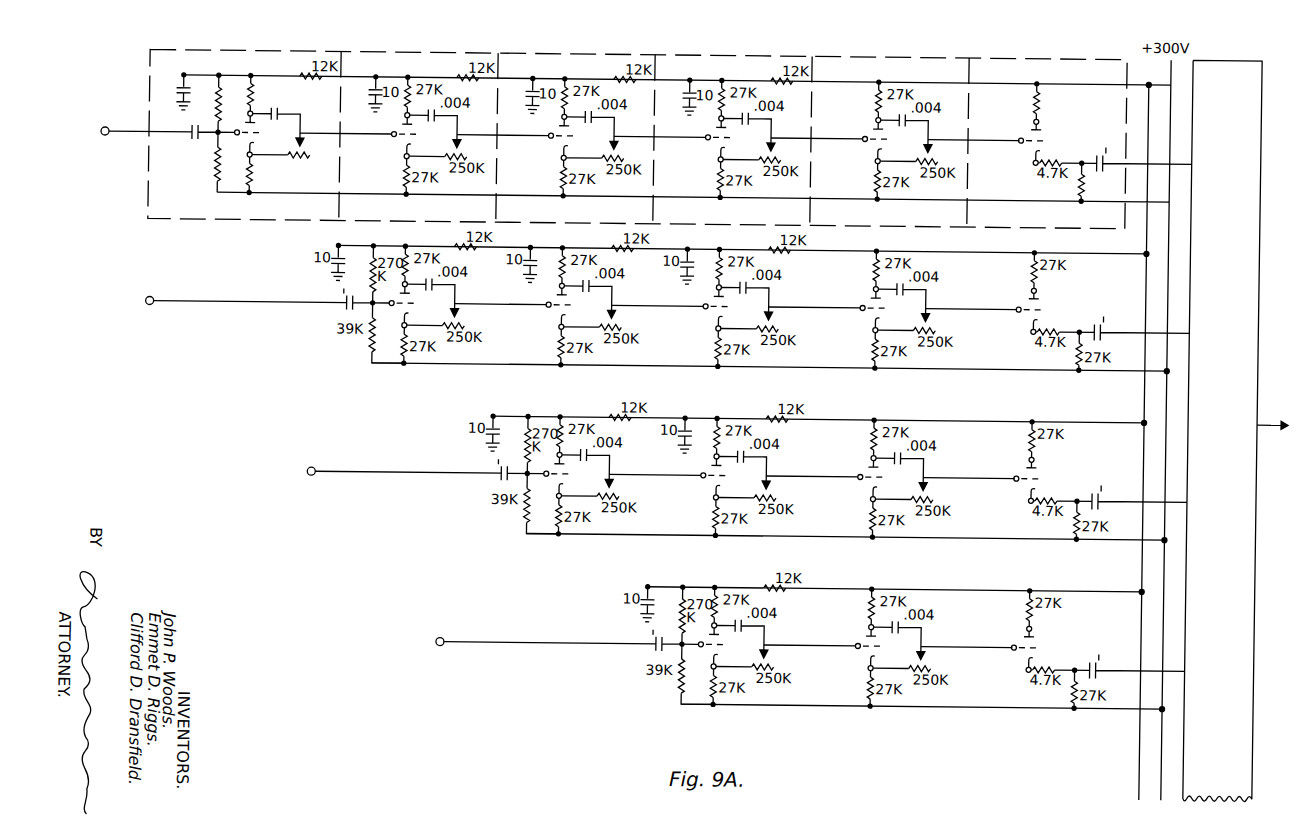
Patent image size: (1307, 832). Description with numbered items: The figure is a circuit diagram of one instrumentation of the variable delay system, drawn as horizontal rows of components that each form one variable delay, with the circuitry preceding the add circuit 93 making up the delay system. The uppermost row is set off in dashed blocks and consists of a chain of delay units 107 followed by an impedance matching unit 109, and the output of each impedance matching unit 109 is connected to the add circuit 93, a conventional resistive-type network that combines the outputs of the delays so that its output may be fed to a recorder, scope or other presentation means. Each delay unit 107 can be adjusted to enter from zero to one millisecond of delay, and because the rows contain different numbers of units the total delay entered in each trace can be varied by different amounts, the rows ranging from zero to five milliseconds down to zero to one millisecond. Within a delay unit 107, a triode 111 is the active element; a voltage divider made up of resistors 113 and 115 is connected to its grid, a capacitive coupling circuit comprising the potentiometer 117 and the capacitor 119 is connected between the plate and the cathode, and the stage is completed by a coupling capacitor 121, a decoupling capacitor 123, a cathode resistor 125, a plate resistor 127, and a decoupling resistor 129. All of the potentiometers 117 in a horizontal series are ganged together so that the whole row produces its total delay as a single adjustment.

The add circuit 93 is at (1237, 50).
The delay unit 107 is at (222, 50).
The impedance matching unit 109 is at (1080, 49).
The triode 111 is at (268, 130).
The resistor 113 is at (217, 90).
The resistor 115 is at (213, 166).
The potentiometer 117 is at (303, 153).
The capacitor 119 is at (279, 104).
The coupling capacitor 121 is at (191, 138).
The decoupling capacitor 123 is at (186, 74).
The cathode resistor 125 is at (246, 163).
The plate resistor 127 is at (248, 81).
The decoupling resistor 129 is at (306, 73).